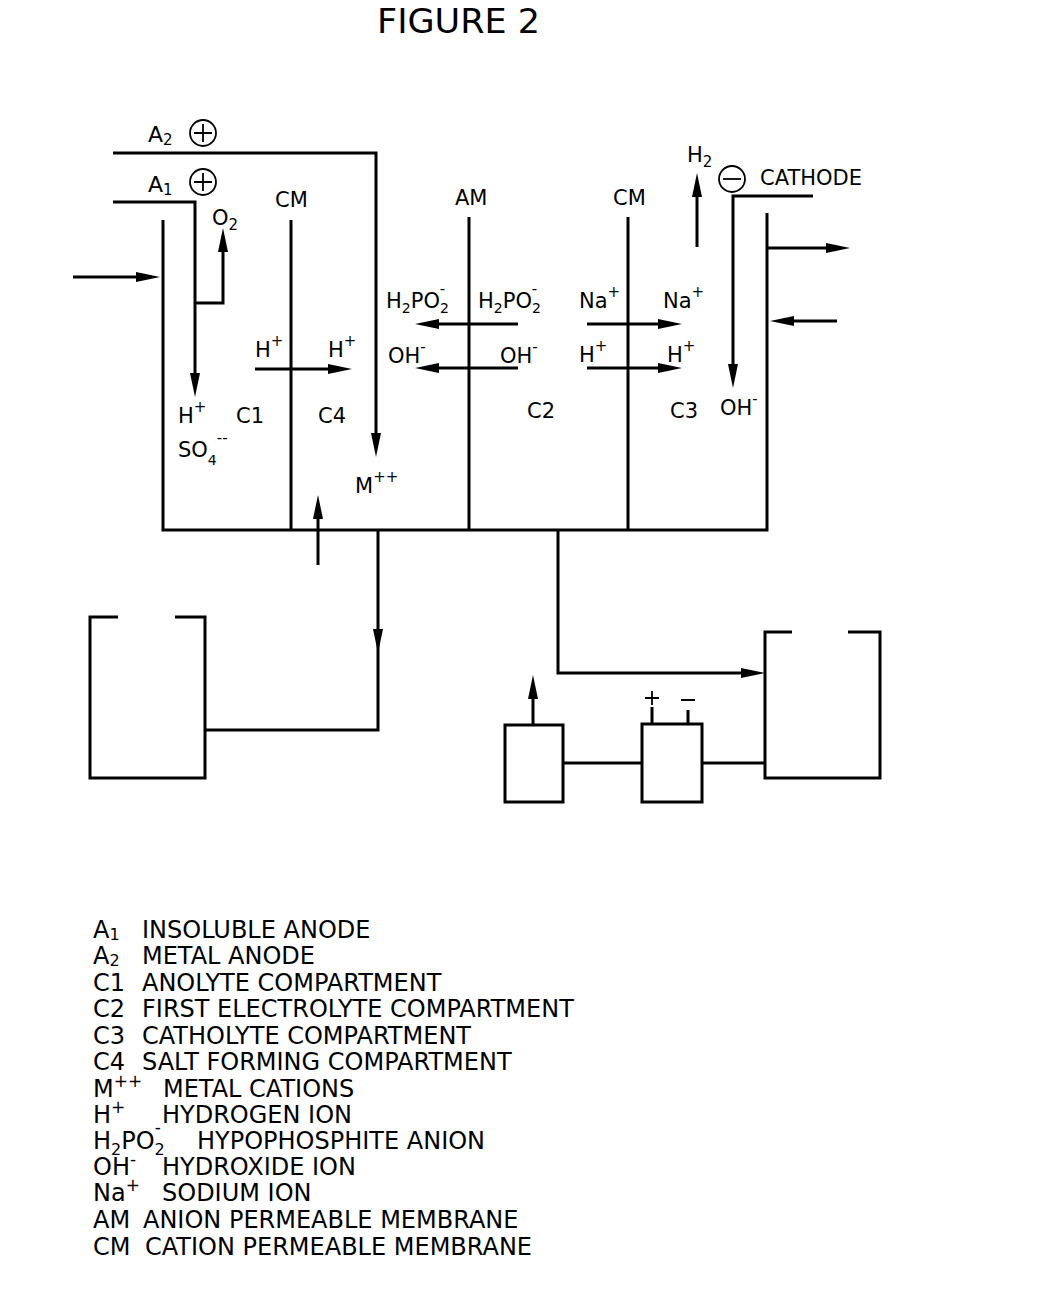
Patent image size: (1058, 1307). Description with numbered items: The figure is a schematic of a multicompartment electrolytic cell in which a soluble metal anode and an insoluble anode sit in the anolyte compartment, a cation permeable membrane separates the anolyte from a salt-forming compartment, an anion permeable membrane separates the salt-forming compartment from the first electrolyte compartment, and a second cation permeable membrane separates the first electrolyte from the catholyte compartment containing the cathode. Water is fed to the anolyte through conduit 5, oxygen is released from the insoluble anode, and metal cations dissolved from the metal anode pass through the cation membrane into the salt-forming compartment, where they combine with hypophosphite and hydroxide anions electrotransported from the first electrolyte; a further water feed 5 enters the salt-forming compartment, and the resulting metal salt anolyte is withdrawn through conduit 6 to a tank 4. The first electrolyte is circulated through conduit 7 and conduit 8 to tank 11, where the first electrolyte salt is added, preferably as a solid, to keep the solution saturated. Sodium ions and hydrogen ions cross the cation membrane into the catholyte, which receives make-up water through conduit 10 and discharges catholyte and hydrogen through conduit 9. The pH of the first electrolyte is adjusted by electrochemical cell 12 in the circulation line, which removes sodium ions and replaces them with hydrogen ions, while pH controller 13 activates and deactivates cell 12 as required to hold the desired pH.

The metal salt tank 4 is at (147, 729).
The conduit 5 is at (214, 423).
The conduit 6 is at (294, 646).
The conduit 7 is at (661, 604).
The conduit 8 is at (733, 749).
The conduit 9 is at (832, 253).
The conduit 10 is at (813, 322).
The tank 11 is at (824, 699).
The electrochemical cell 12 is at (665, 764).
The pH controller 13 is at (524, 756).